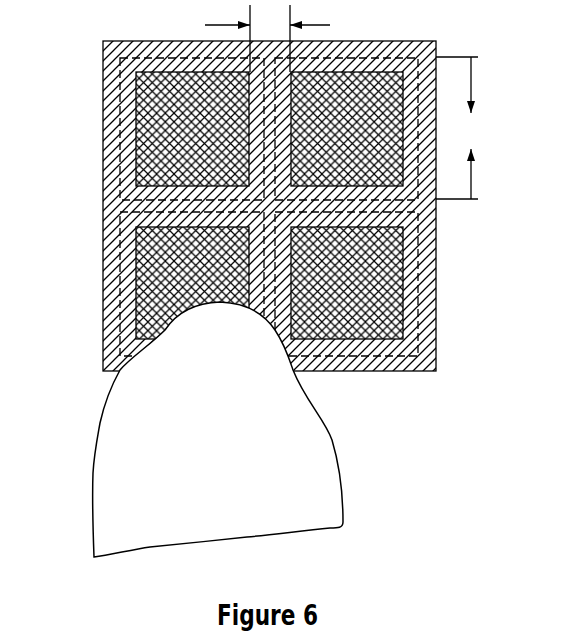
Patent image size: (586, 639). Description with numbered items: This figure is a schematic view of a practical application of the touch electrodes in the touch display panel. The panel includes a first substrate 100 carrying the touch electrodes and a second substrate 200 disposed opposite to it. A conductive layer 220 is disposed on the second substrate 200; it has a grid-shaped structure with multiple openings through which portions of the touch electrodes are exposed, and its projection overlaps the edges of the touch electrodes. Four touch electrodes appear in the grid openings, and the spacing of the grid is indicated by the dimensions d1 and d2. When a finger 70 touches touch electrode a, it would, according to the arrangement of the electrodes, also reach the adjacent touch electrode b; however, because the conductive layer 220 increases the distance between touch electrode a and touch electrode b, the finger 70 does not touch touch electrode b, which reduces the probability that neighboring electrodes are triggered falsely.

The second substrate 200 is at (130, 175).
The first substrate 100 is at (160, 288).
The conductive layer 220 is at (403, 273).
The finger 70 is at (300, 492).
The touch electrode a is at (148, 300).
The touch electrode b is at (372, 325).
The distance d1 is at (267, 38).
The distance d2 is at (461, 128).